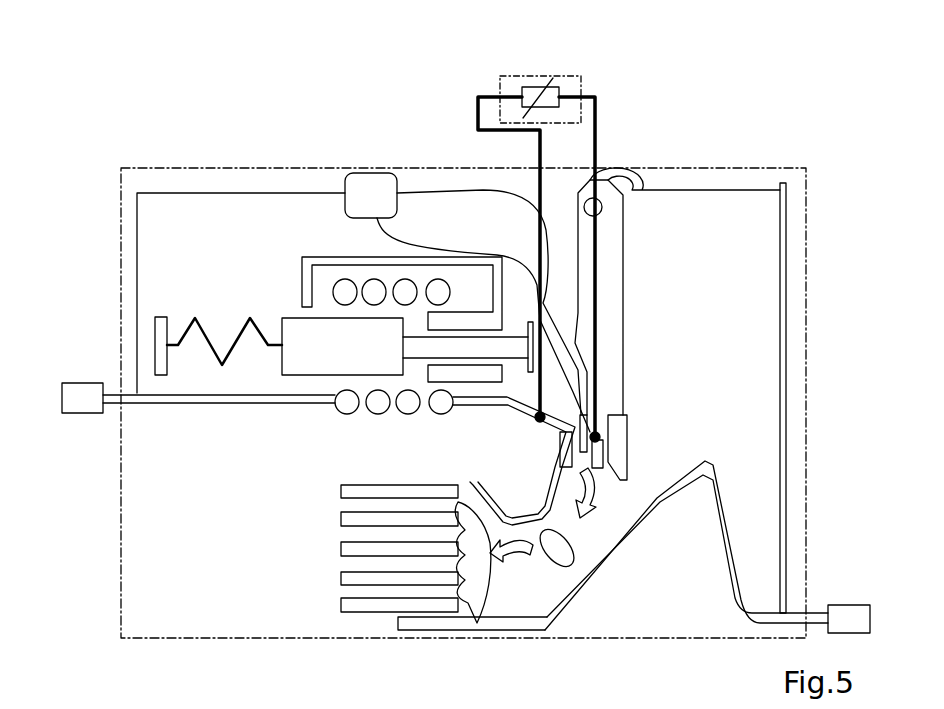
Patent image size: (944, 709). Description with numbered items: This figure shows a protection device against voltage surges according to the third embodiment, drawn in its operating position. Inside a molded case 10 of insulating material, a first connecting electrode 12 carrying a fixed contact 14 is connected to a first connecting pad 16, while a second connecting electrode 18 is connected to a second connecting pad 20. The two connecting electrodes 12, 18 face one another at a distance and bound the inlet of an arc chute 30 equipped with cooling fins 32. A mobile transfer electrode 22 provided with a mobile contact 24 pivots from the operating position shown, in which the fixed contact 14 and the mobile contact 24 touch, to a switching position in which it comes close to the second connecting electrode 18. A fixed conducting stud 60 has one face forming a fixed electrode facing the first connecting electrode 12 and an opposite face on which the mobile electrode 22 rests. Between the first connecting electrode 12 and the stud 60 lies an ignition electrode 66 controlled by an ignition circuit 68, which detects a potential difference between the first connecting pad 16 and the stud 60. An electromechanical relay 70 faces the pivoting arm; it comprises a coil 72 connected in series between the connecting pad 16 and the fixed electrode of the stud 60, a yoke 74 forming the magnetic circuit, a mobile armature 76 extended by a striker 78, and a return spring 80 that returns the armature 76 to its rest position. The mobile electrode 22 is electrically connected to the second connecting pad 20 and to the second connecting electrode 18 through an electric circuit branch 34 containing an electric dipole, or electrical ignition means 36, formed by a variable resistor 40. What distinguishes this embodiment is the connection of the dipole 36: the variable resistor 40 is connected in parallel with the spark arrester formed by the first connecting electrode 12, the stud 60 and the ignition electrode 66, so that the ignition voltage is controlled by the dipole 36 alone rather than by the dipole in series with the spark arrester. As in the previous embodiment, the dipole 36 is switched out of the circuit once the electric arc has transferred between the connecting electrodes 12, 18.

The molded case 10 is at (121, 508).
The first connecting electrode 12 is at (507, 517).
The fixed contact 14 is at (568, 455).
The first connecting pad 16 is at (92, 393).
The second connecting electrode 18 is at (422, 625).
The second connecting pad 20 is at (850, 613).
The mobile transfer electrode 22 is at (615, 277).
The mobile contact 24 is at (617, 460).
The arc chute 30 is at (319, 578).
The cooling fins 32 is at (348, 522).
The electric circuit branch 34 is at (785, 522).
The electrical ignition means 36 is at (582, 85).
The variable resistor 40 is at (535, 85).
The fixed conducting stud 60 is at (610, 440).
The ignition electrode 66 is at (600, 430).
The ignition circuit 68 is at (362, 195).
The electromechanical relay 70 is at (275, 222).
The coil 72 is at (347, 412).
The yoke 74 is at (312, 262).
The mobile armature 76 is at (317, 333).
The striker 78 is at (480, 347).
The return spring 80 is at (193, 325).